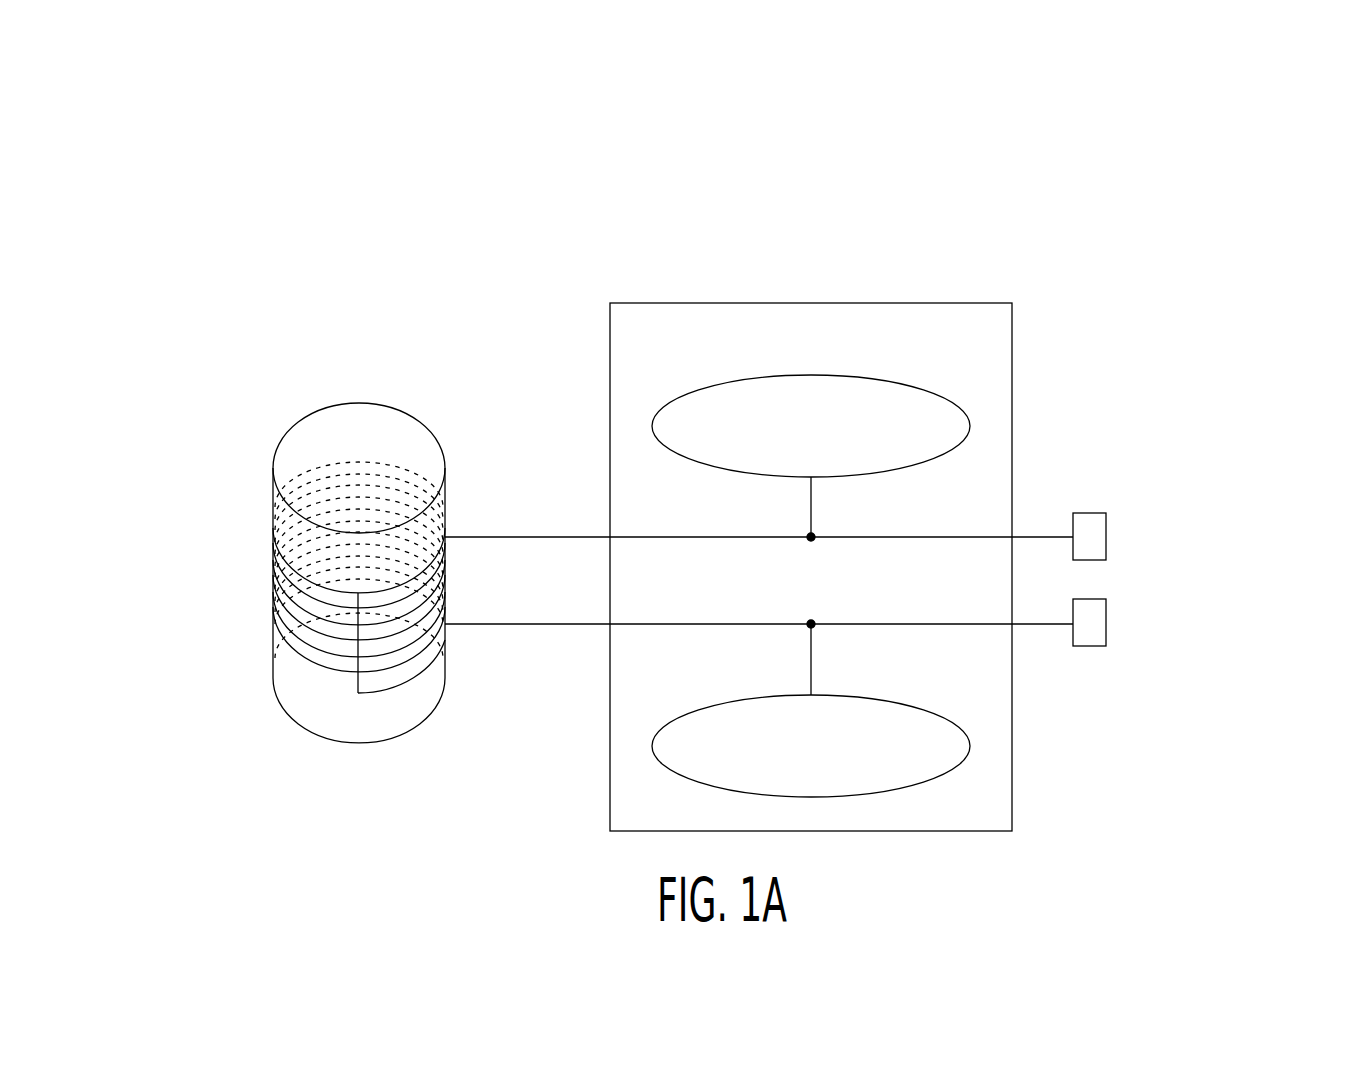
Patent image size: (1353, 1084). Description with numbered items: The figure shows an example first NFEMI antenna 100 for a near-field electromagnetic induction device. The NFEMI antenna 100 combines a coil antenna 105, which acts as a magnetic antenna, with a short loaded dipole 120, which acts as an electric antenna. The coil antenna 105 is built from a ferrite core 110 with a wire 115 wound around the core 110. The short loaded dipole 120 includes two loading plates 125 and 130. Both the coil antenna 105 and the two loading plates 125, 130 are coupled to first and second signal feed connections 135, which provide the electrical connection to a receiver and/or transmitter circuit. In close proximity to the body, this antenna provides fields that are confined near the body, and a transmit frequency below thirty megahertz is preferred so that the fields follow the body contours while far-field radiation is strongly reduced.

The NFEMI antenna 100 is at (323, 194).
The coil antenna 105 is at (246, 345).
The ferrite core 110 is at (283, 433).
The wire 115 is at (273, 594).
The short loaded dipole 120 is at (692, 303).
The loading plate 125 is at (970, 420).
The loading plate 130 is at (970, 742).
The signal feed connections 135 is at (1106, 527).